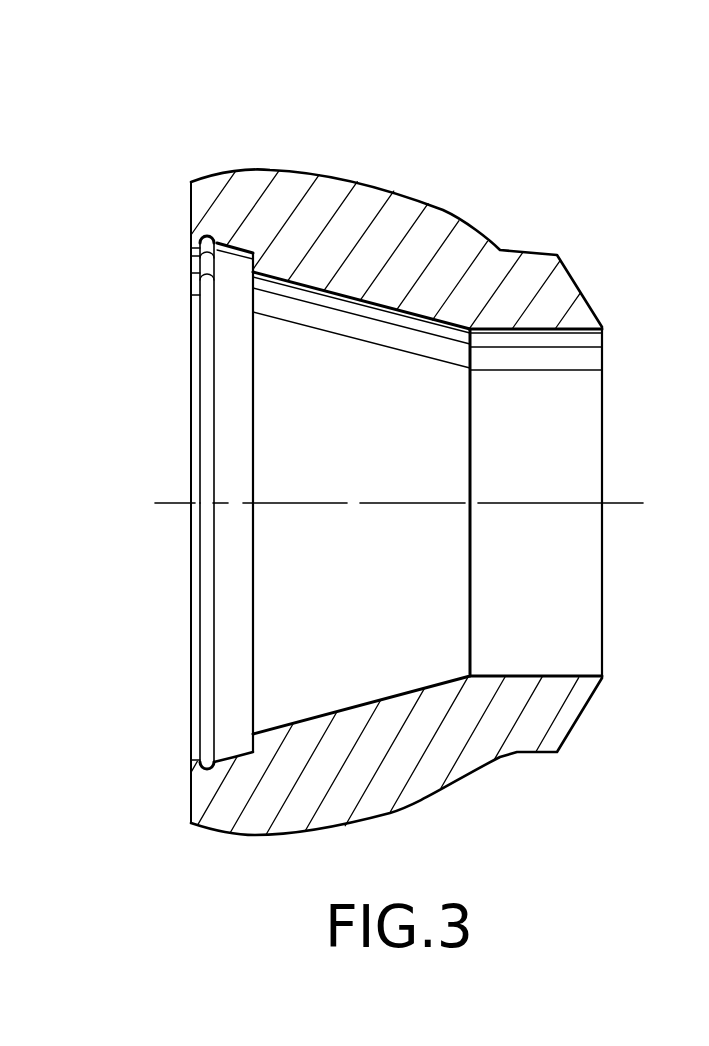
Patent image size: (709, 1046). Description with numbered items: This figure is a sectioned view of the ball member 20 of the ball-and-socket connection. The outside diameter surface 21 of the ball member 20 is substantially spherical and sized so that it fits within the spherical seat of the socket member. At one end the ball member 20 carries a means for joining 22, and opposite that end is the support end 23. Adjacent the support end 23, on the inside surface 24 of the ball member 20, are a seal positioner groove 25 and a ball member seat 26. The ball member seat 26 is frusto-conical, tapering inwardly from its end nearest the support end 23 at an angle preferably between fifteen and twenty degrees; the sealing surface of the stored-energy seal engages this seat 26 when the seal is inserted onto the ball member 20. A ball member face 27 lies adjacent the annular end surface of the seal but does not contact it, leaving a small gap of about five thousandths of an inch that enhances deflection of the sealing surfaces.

The ball member 20 is at (445, 208).
The outside diameter surface 21 is at (225, 170).
The means for joining 22 is at (590, 292).
The support end 23 is at (191, 214).
The inside surface 24 is at (375, 305).
The seal positioner groove 25 is at (191, 750).
The ball member seat 26 is at (236, 247).
The ball member face 27 is at (247, 746).